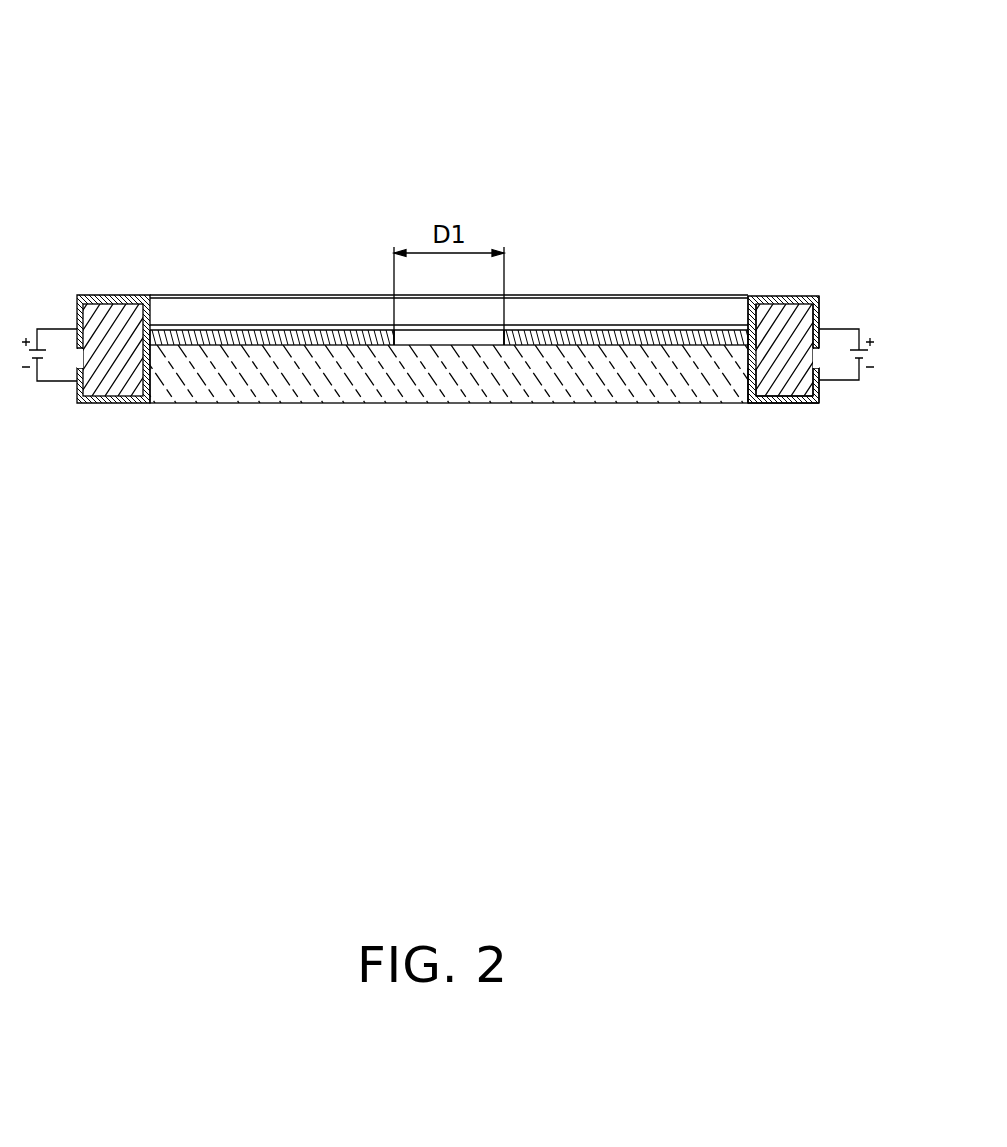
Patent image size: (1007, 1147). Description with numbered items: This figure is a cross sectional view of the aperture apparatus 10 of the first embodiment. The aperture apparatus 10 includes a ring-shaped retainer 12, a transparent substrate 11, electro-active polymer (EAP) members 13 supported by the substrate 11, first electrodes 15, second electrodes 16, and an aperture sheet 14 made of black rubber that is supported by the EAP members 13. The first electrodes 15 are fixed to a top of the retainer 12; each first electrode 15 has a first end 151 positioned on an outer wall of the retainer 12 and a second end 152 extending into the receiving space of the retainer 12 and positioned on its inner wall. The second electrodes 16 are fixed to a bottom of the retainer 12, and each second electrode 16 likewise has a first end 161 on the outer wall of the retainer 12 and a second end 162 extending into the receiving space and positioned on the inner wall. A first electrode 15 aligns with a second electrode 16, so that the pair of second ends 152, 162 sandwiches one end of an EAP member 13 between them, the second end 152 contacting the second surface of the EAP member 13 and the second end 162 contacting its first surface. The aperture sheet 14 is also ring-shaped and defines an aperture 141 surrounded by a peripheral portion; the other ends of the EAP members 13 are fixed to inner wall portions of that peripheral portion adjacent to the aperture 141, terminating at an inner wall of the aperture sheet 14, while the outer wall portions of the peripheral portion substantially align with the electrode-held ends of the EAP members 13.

The aperture apparatus 10 is at (312, 77).
The transparent substrate 11 is at (597, 378).
The retainer 12 is at (808, 296).
The electro-active polymer member 13 is at (650, 327).
The aperture sheet 14 is at (575, 328).
The aperture 141 is at (415, 345).
The first electrode 15 is at (780, 296).
The first end of first electrode 151 is at (820, 346).
The second end of first electrode 152 is at (748, 322).
The second electrode 16 is at (786, 398).
The first end of second electrode 161 is at (817, 376).
The second end of second electrode 162 is at (753, 378).